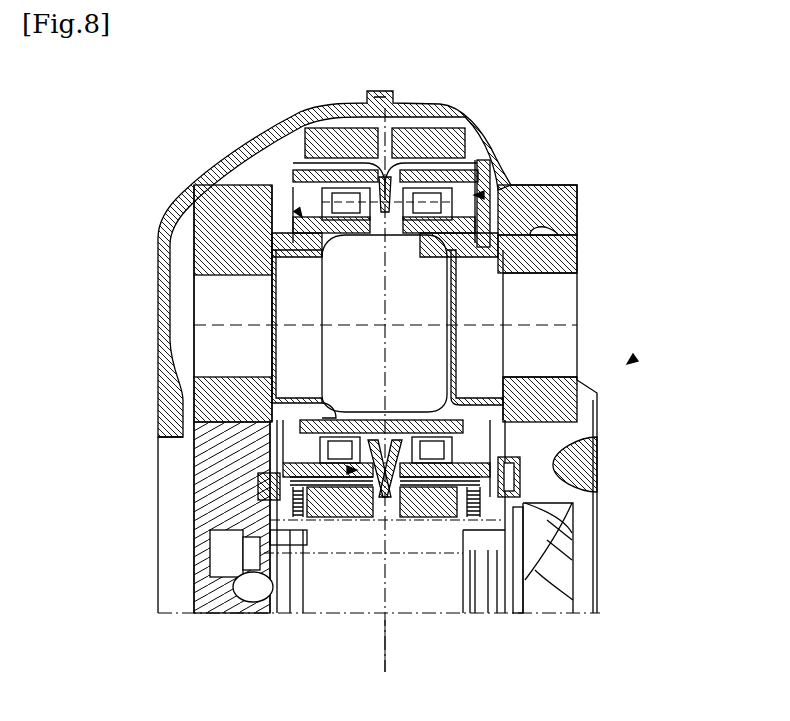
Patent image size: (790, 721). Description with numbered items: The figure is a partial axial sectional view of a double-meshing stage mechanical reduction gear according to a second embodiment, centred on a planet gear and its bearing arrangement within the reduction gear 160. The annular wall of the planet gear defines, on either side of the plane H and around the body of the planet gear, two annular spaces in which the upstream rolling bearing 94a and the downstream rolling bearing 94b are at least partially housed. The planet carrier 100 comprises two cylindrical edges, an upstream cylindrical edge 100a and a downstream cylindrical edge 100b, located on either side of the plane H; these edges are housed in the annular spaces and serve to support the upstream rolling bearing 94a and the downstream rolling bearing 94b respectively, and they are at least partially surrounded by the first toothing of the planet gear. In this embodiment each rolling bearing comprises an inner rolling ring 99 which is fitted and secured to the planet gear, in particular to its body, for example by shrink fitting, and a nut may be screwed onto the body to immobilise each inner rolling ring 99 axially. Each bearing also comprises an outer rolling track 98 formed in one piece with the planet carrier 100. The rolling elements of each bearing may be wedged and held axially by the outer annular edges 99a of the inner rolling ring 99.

The outer rolling track 98 is at (480, 128).
The upstream rolling bearing 94a is at (230, 247).
The downstream rolling bearing 94b is at (527, 185).
The inner rolling ring 99 is at (577, 240).
The outer annular edge 99a is at (296, 216).
The planet carrier 100 is at (212, 546).
The upstream cylindrical edge 100a is at (298, 212).
The downstream cylindrical edge 100b is at (480, 195).
The drive assembly 160 is at (635, 360).
The plane H is at (387, 633).